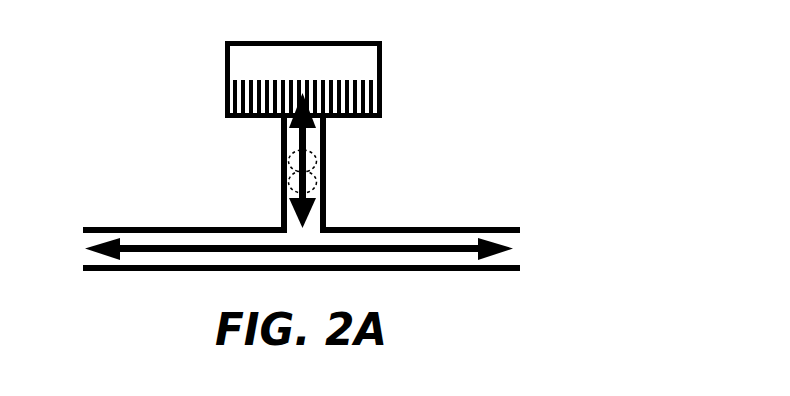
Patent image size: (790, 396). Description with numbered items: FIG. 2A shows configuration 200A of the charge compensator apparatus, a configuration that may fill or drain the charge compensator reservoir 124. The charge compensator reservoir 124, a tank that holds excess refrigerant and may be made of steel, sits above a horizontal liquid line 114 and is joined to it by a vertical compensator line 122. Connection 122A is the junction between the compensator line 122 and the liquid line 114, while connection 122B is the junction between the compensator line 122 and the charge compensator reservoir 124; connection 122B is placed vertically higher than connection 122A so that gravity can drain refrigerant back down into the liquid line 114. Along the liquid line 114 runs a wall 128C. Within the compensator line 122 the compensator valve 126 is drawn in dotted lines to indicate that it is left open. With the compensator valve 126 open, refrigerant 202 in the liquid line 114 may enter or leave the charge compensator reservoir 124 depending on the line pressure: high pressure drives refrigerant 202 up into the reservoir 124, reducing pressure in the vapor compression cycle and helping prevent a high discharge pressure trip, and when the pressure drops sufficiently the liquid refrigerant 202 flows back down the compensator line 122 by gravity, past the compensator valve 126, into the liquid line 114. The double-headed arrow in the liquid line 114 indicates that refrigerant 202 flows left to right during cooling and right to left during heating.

The configuration 200A is at (414, 149).
The charge compensator reservoir 124 is at (226, 83).
The refrigerant 202 is at (364, 80).
The compensator line 122 is at (282, 210).
The compensator valve 126 is at (282, 156).
The connection 122B is at (326, 128).
The connection 122A is at (315, 232).
The liquid line 114 is at (115, 228).
The channel wall 128C is at (208, 228).